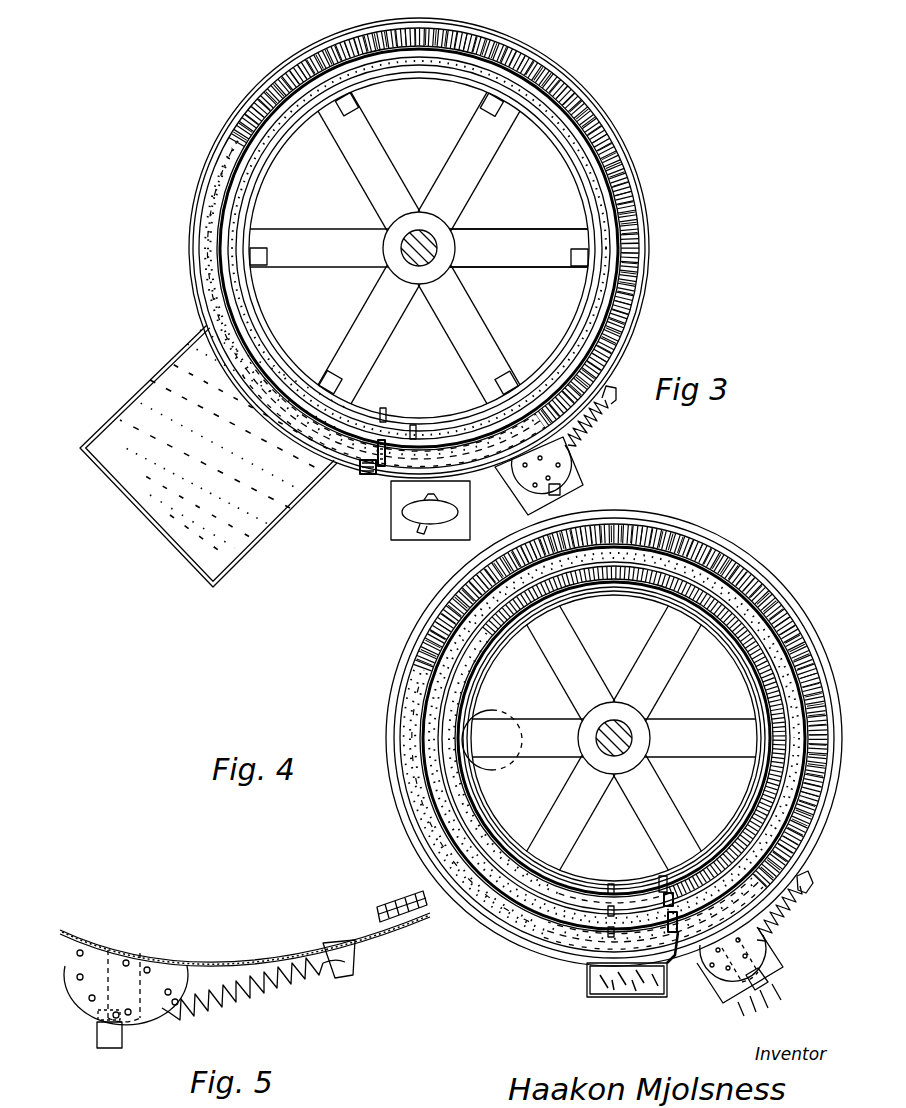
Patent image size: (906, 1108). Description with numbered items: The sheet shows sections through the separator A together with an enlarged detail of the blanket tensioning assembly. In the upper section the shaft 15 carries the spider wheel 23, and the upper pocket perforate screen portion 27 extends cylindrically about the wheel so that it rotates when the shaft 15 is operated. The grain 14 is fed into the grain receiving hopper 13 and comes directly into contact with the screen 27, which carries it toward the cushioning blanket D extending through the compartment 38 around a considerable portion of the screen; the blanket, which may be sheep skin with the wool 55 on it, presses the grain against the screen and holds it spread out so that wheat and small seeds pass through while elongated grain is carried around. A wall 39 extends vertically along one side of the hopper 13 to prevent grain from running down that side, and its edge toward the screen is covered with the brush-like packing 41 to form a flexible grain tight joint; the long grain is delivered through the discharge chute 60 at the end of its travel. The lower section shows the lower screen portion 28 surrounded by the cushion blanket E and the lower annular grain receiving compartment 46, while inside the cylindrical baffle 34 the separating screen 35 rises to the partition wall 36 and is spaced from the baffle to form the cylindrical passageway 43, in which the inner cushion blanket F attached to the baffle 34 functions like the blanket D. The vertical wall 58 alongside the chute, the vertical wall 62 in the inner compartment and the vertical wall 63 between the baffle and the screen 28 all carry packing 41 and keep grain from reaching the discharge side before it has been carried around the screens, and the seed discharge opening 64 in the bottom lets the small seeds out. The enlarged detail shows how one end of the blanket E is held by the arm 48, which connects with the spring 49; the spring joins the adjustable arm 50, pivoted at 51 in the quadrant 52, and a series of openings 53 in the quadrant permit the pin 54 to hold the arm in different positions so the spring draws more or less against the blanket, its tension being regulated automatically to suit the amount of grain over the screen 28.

In FIG. 3, the grain receiving hopper 13 is at (192, 557).
In FIG. 3, the grain 14 is at (180, 368).
In FIG. 3, the shaft 15 is at (400, 250).
In FIG. 4, the shaft 15 is at (632, 740).
In FIG. 3, the spider wheel 23 is at (510, 270).
In FIG. 3, the upper pocket perforate screen portion 27 is at (257, 182).
In FIG. 4, the lower screen portion 28 is at (523, 912).
In FIG. 4, the cylindrical baffle 34 is at (580, 914).
In FIG. 4, the separating screen 35 is at (484, 832).
In FIG. 3, the partition wall 36 is at (419, 248).
In FIG. 3, the compartment 38 is at (220, 168).
In FIG. 3, the wall 39 is at (362, 470).
In FIG. 3, the brush-like packing 41 is at (384, 445).
In FIG. 4, the brush-like packing 41 is at (665, 893).
In FIG. 4, the cylindrical passageway 43 is at (521, 880).
In FIG. 4, the lower annular grain receiving compartment 46 is at (410, 810).
In FIG. 4, the arm 48 is at (612, 998).
In FIG. 5, the arm 48 is at (348, 980).
In FIG. 4, the spring 49 is at (796, 916).
In FIG. 5, the spring 49 is at (245, 1006).
In FIG. 4, the adjustable arm 50 is at (778, 972).
In FIG. 5, the adjustable arm 50 is at (122, 1040).
In FIG. 4, the pivot 51 is at (733, 978).
In FIG. 5, the pivot 51 is at (130, 960).
In FIG. 4, the quadrant 52 is at (758, 985).
In FIG. 5, the quadrant 52 is at (155, 966).
In FIG. 5, the openings 53 is at (92, 988).
In FIG. 5, the pin 54 is at (110, 1013).
In FIG. 3, the wool 55 is at (626, 216).
In FIG. 5, the wool 55 is at (398, 898).
In FIG. 4, the vertical wall 58 is at (672, 962).
In FIG. 3, the discharge chute 60 is at (577, 478).
In FIG. 4, the discharge chute 60 is at (786, 976).
In FIG. 4, the vertical wall 62 is at (665, 900).
In FIG. 4, the vertical wall 63 is at (668, 922).
In FIG. 4, the seed discharge opening 64 is at (492, 716).
In FIG. 4, the separator A is at (614, 738).
In FIG. 3, the cushioning blanket D is at (585, 108).
In FIG. 4, the cushion blanket E is at (695, 548).
In FIG. 5, the cushion blanket E is at (398, 920).
In FIG. 4, the inner cushion blanket F is at (762, 660).